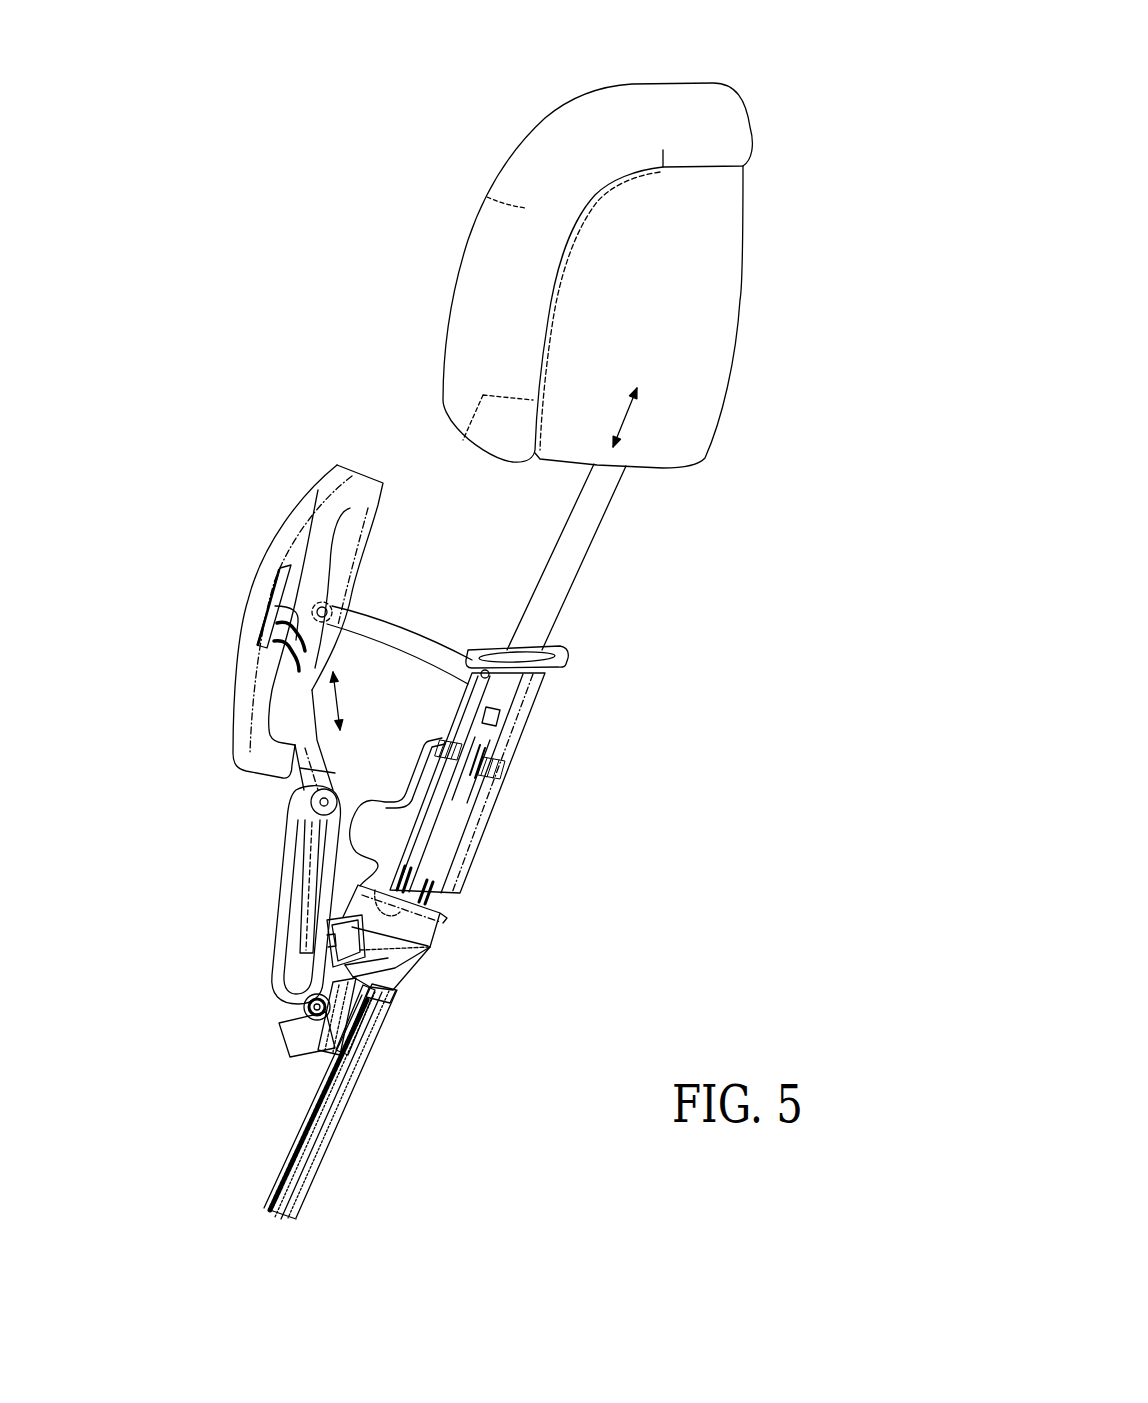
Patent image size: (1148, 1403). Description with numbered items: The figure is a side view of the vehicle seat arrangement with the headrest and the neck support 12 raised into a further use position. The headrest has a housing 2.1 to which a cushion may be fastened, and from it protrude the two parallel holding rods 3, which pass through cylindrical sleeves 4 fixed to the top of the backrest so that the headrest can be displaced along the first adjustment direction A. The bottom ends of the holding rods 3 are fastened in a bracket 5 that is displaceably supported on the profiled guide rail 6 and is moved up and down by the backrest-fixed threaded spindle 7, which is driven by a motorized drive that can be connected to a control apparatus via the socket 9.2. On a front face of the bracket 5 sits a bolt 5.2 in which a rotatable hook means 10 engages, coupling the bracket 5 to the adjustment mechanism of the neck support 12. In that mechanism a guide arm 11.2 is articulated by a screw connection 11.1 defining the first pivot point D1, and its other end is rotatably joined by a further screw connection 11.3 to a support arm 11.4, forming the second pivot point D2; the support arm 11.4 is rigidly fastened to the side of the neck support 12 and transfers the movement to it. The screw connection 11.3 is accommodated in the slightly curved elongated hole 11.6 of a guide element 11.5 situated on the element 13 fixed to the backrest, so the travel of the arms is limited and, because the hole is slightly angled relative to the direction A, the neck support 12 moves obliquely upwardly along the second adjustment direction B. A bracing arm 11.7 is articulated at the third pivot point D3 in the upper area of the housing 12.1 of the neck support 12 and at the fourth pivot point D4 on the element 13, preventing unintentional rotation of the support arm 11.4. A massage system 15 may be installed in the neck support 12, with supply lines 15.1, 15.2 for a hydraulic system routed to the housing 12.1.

The housing 2.1 is at (695, 368).
The neck support 12 is at (730, 118).
The housing 12.1 is at (327, 567).
The holding rods 3 is at (577, 537).
The cylindrical sleeves 4 is at (527, 700).
The fourth pivot point D4 is at (487, 660).
The third pivot point D3 is at (323, 607).
The bracing arm 11.7 is at (423, 647).
The massage system 15 is at (280, 587).
The supply line 15.1 is at (278, 611).
The supply line 15.2 is at (275, 673).
The support arm 11.4 is at (310, 750).
The screw connection 11.3 is at (310, 800).
The second pivot point D2 is at (337, 788).
The elongated hole 11.6 is at (300, 857).
The guide element 11.5 is at (283, 900).
The guide arm 11.2 is at (300, 940).
The element 13 is at (440, 893).
The socket 9.2 is at (365, 927).
The bracket 5 is at (397, 967).
The bolt 5.2 is at (383, 987).
The first pivot point D1 is at (305, 1008).
The screw connection 11.1 is at (307, 1043).
The hook means 10 is at (360, 997).
The guide rail 6 is at (322, 1150).
The threaded spindle 7 is at (282, 1180).
The first adjustment direction A is at (634, 417).
The second adjustment direction B is at (346, 701).